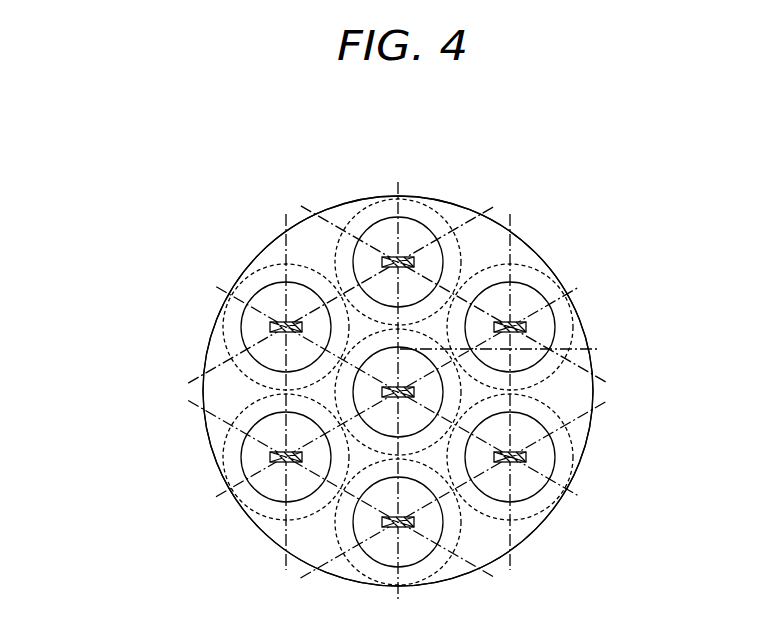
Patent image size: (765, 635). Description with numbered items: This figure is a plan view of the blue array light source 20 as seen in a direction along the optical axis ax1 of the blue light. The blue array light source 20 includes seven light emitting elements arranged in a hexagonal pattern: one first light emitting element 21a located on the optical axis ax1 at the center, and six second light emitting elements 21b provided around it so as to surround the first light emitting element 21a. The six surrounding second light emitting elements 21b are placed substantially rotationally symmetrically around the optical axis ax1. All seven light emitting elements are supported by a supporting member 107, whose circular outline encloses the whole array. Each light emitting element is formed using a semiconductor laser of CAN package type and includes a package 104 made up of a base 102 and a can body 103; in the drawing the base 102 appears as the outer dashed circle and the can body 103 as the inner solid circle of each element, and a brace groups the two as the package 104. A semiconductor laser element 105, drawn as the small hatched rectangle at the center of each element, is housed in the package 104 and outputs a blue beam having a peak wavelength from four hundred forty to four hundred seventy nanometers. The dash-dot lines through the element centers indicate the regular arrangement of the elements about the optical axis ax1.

The blue array light source 20 is at (450, 196).
The first light emitting element 21a is at (427, 342).
The second light emitting element 21b is at (308, 277).
The base 102 is at (230, 343).
The can body 103 is at (252, 323).
The package 104 is at (198, 327).
The semiconductor laser element 105 is at (280, 322).
The supporting member 107 is at (218, 428).
The optical axis ax1 is at (525, 340).